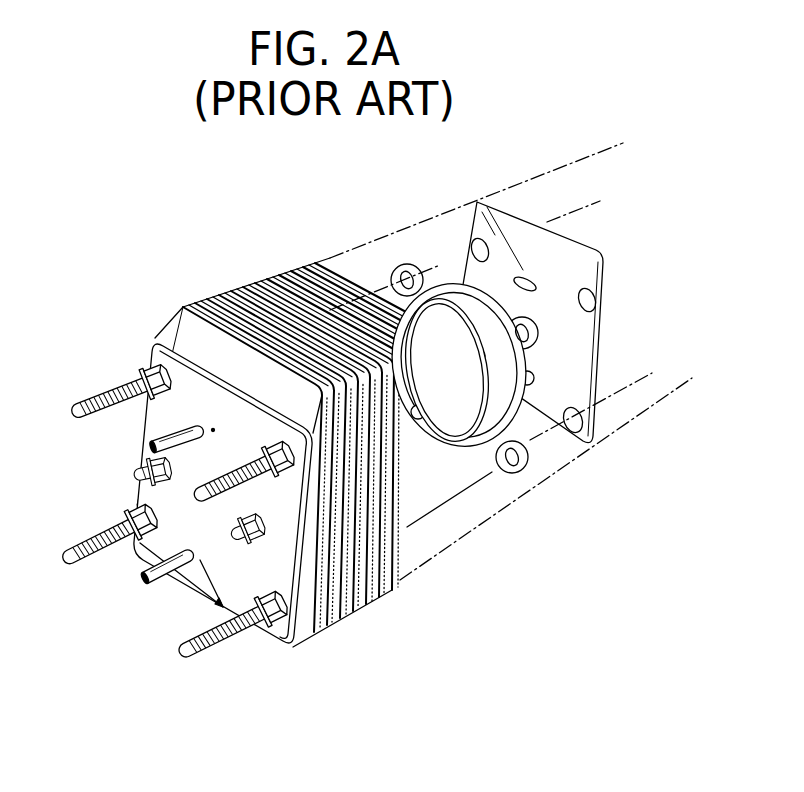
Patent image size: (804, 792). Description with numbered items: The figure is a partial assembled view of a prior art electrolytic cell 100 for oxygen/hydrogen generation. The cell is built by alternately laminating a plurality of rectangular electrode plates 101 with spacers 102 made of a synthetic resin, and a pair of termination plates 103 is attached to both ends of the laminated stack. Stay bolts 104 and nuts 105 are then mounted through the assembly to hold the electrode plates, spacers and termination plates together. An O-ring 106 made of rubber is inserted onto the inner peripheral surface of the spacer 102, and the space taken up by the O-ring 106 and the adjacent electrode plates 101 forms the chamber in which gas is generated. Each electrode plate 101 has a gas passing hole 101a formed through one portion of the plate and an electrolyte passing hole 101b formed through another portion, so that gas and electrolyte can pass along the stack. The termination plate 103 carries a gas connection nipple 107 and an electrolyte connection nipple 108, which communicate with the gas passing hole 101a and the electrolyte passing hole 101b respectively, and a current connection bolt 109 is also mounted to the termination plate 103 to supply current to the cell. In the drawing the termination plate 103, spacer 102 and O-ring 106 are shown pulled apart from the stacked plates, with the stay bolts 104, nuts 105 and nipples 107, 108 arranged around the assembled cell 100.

The electrolytic cell 100 is at (318, 408).
The electrode plate 101 is at (563, 322).
The gas passing hole 101a is at (532, 284).
The electrolyte passing hole 101b is at (532, 378).
The spacer 102 is at (452, 283).
The termination plate 103 is at (290, 527).
The stay bolt 104 is at (90, 558).
The nut 105 is at (213, 430).
The O-ring 106 is at (462, 445).
The gas connection nipple 107 is at (153, 447).
The electrolyte connection nipple 108 is at (162, 580).
The current connection bolt 109 is at (240, 545).